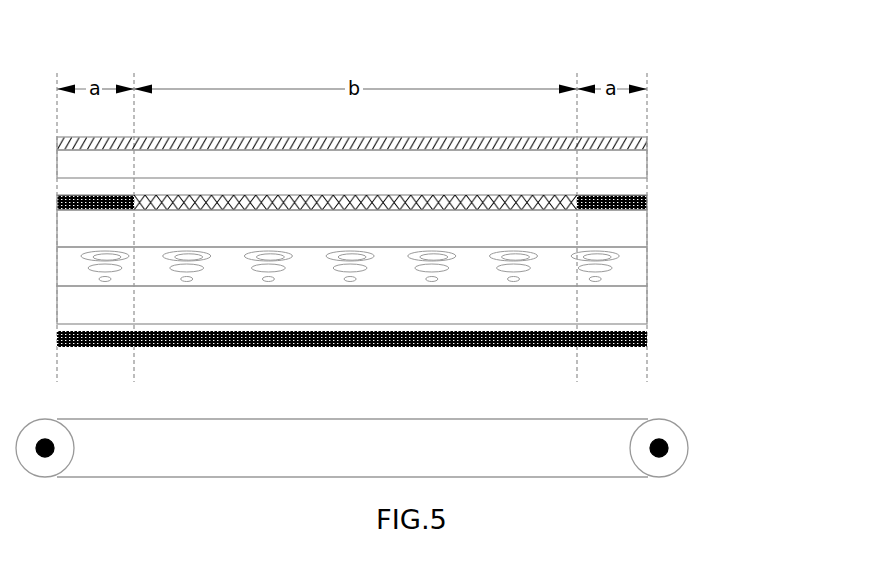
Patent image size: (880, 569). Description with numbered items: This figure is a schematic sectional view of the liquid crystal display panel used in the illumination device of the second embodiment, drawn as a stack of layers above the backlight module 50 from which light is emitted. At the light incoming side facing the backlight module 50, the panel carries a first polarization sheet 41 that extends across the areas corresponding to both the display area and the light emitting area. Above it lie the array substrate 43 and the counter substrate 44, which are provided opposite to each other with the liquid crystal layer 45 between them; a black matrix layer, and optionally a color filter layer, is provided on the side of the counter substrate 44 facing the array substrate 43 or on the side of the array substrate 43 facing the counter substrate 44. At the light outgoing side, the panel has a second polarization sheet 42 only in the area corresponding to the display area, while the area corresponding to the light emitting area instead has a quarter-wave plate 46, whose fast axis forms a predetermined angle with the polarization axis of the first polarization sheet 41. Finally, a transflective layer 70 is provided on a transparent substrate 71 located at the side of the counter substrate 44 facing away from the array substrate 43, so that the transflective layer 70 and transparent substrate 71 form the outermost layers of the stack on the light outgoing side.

The transflective layer 70 is at (647, 145).
The transparent substrate 71 is at (647, 165).
The second polarization sheet 42 is at (647, 201).
The quarter-wave plate 46 is at (447, 195).
The counter substrate 44 is at (647, 230).
The liquid crystal layer 45 is at (647, 268).
The array substrate 43 is at (647, 308).
The first polarization sheet 41 is at (647, 343).
The backlight module 50 is at (690, 450).